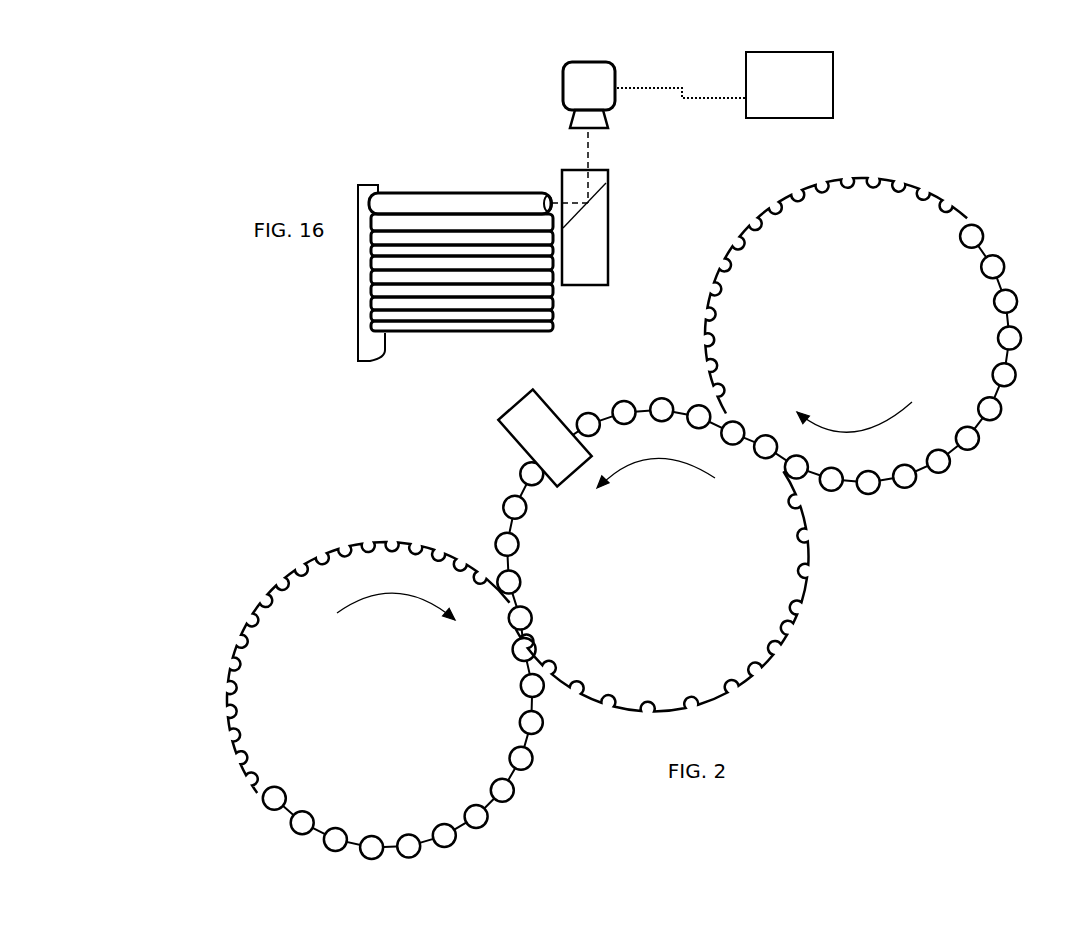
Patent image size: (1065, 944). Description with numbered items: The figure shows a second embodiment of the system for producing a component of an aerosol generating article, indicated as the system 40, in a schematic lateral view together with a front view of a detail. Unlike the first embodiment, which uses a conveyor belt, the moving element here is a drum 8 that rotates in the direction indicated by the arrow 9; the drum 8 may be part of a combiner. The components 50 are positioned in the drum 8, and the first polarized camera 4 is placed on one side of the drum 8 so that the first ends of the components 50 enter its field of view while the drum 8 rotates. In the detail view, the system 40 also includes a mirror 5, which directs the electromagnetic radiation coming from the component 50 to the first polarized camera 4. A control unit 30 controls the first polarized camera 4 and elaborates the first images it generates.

In FIG. 16, the first polarized camera 4 is at (648, 80).
In FIG. 2, the first polarized camera 4 is at (535, 453).
In FIG. 16, the mirror 5 is at (596, 262).
In FIG. 16, the drum 8 is at (358, 258).
In FIG. 2, the drum 8 is at (730, 645).
In FIG. 2, the arrow 9 is at (650, 554).
In FIG. 16, the control unit 30 is at (787, 93).
In FIG. 16, the system 40 is at (350, 256).
In FIG. 16, the components 50 is at (460, 340).
In FIG. 2, the components 50 is at (500, 490).